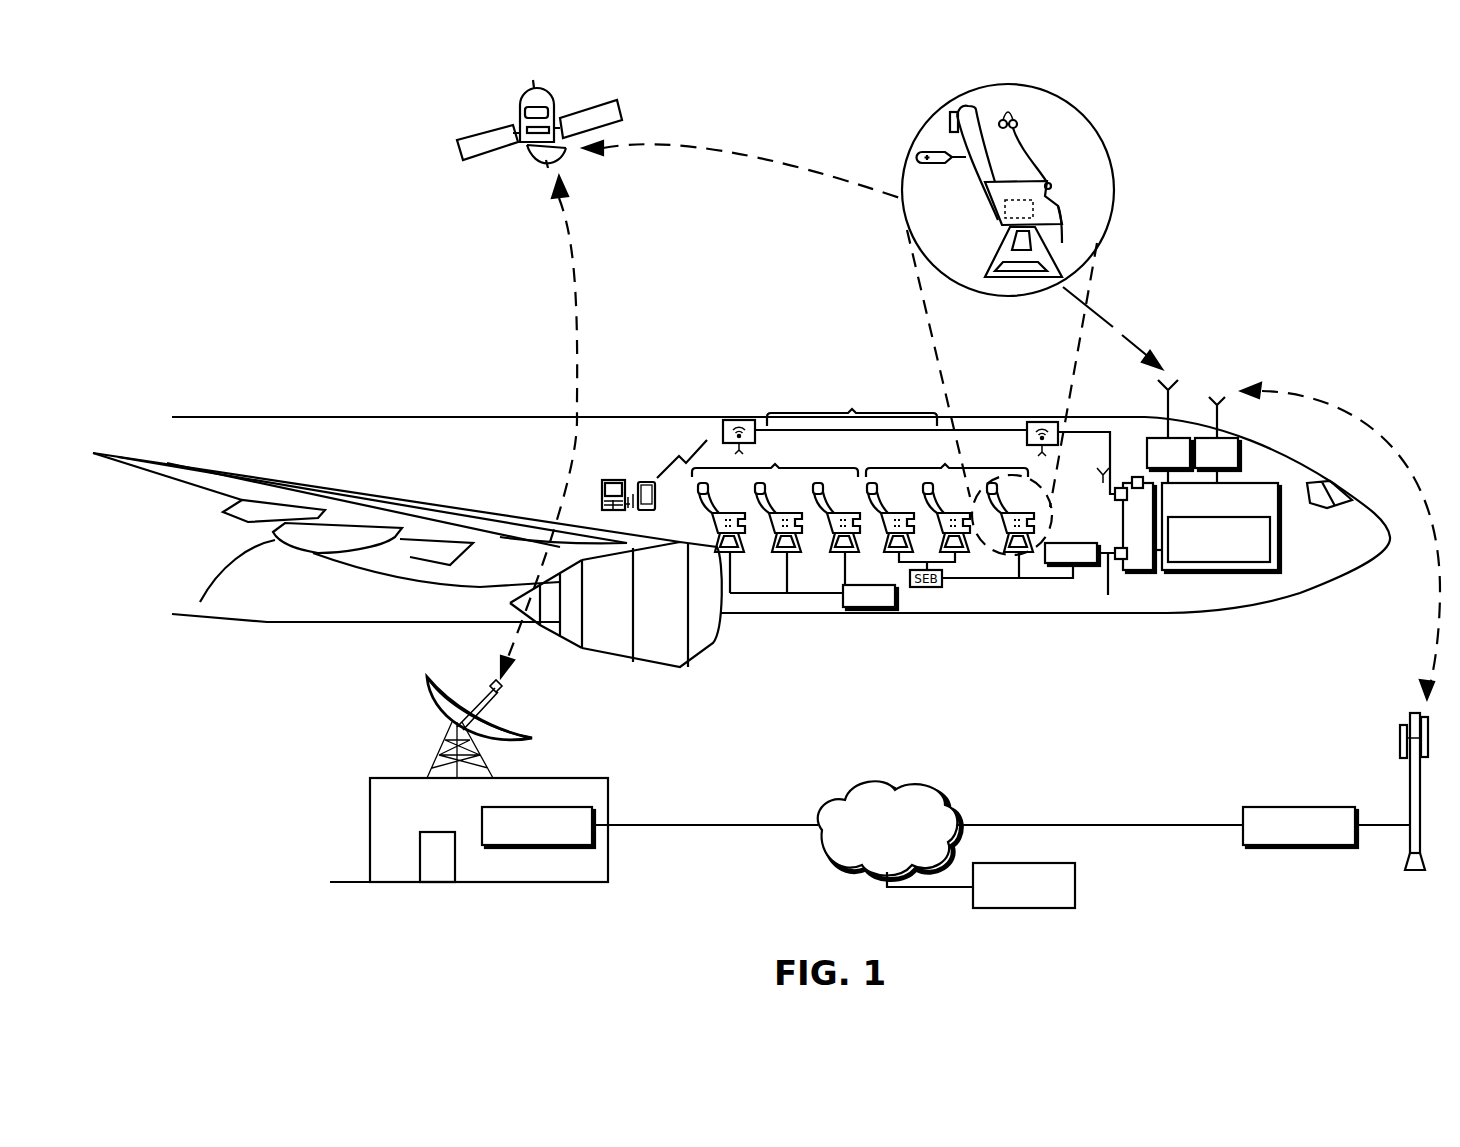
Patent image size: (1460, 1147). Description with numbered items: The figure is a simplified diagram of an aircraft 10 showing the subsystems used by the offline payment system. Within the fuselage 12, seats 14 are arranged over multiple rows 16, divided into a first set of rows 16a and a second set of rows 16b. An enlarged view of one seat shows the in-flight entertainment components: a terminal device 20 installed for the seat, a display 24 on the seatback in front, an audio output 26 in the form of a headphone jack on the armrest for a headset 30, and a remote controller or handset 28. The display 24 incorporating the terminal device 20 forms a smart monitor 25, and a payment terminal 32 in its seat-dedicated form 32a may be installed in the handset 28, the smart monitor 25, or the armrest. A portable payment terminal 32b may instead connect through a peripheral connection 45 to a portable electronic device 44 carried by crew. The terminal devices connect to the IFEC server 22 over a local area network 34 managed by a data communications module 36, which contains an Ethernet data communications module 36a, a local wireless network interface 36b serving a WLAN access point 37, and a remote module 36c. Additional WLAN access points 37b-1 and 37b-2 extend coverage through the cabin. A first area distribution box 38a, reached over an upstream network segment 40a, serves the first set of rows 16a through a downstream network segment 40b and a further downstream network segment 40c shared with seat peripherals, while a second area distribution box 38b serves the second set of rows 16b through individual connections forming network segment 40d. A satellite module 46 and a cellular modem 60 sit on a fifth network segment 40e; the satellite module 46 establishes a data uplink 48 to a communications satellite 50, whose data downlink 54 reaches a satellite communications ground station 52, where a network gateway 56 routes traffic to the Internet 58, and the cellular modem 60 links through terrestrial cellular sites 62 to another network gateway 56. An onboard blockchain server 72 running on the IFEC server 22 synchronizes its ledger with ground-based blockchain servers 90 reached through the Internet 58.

The aircraft 10 is at (741, 525).
The fuselage 12 is at (470, 417).
The seat 14 is at (990, 213).
The rows 16 is at (863, 468).
The first set of rows 16a is at (950, 495).
The second set of rows 16b is at (776, 495).
The terminal device 20 is at (1030, 252).
The IFEC server 22 is at (1280, 548).
The display 24 is at (948, 116).
The smart monitor 25 is at (930, 113).
The audio output 26 is at (1052, 186).
The handset 28 is at (938, 166).
The headset 30 is at (1044, 150).
The payment terminal 32 is at (797, 285).
The payment terminal 32a is at (958, 108).
The portable payment terminal 32b is at (612, 478).
The local area network 34 is at (1220, 569).
The data communications module 36 is at (1110, 472).
The Ethernet data communications module 36a is at (1118, 548).
The local wireless network interface 36b is at (1121, 488).
The remote module 36c is at (1138, 477).
The WLAN access point 37 is at (1098, 475).
The additional WLAN access point 37b-1 is at (1041, 421).
The additional WLAN access point 37b-2 is at (740, 418).
The first area distribution box 38a is at (1088, 566).
The second area distribution box 38b is at (870, 607).
The upstream network segment 40a is at (1108, 596).
The downstream network segment 40b is at (1040, 581).
The further downstream network segment 40c is at (923, 530).
The network segment 40d is at (803, 594).
The fifth network segment 40e is at (1208, 470).
The portable electronic device 44 is at (647, 481).
The peripheral connection 45 is at (629, 514).
The satellite module 46 is at (1177, 437).
The data uplink 48 is at (762, 158).
The communications satellite 50 is at (528, 158).
The satellite communications ground station 52 is at (370, 823).
The data downlink 54 is at (578, 290).
The network gateway 56 is at (537, 845).
The Internet 58 is at (824, 799).
The cellular modem 60 is at (1228, 438).
The terrestrial cellular sites 62 is at (1407, 864).
The onboard blockchain server 72 is at (1238, 562).
The ground-based blockchain servers 90 is at (1075, 887).